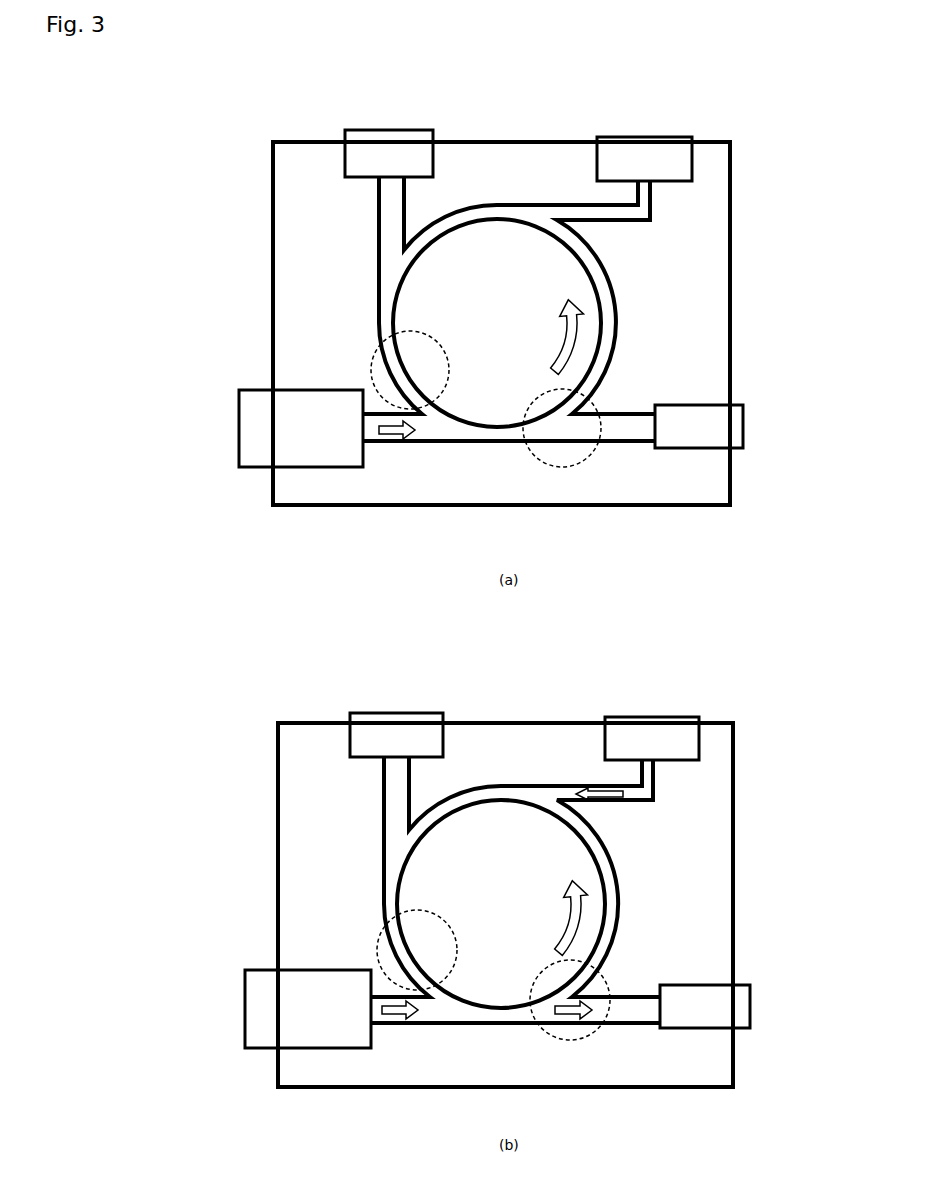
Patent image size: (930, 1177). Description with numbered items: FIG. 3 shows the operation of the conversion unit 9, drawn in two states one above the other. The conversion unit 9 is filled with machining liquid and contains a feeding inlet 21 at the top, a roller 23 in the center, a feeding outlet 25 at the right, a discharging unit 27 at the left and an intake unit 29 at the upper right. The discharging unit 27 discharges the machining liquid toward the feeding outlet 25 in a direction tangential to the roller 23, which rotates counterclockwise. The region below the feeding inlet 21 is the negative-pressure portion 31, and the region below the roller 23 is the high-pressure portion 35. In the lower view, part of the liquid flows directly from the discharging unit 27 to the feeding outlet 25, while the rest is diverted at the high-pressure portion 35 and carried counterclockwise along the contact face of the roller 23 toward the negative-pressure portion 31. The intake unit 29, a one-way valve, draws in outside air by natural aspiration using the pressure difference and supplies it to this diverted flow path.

The conversion unit 9 is at (731, 203).
The feeding inlet 21 is at (434, 155).
The roller 23 is at (502, 265).
The feeding outlet 25 is at (731, 403).
The discharging unit 27 is at (317, 388).
The intake unit 29 is at (692, 165).
The negative-pressure portion 31 is at (433, 397).
The high-pressure portion 35 is at (543, 463).